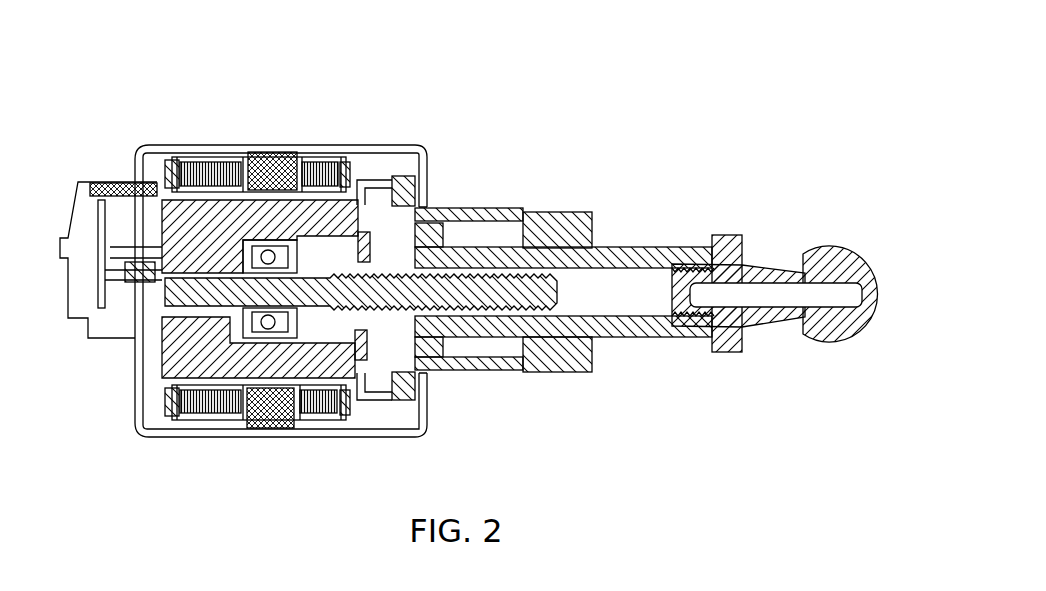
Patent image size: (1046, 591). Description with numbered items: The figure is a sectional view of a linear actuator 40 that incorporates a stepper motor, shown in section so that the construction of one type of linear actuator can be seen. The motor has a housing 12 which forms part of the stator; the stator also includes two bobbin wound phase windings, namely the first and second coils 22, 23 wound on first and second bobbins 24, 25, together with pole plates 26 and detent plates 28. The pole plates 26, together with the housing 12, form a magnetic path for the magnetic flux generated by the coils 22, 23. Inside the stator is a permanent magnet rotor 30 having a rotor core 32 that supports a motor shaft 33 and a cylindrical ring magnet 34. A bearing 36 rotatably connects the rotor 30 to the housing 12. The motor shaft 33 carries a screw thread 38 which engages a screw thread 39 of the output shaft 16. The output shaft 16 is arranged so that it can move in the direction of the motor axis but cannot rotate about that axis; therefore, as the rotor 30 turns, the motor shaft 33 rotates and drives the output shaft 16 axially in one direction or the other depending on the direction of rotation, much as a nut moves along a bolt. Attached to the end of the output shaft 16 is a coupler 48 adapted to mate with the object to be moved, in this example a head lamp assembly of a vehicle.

The housing 12 is at (265, 145).
The output shaft 16 is at (655, 247).
The first coil 22 is at (307, 417).
The second coil 23 is at (230, 407).
The first bobbin 24 is at (343, 433).
The second bobbin 25 is at (183, 417).
The pole plates 26 is at (157, 390).
The detent plates 28 is at (281, 425).
The rotor 30 is at (178, 143).
The rotor core 32 is at (137, 352).
The motor shaft 33 is at (361, 187).
The cylindrical ring magnet 34 is at (203, 145).
The bearing 36 is at (297, 209).
The screw thread 38 is at (465, 273).
The screw thread 39 is at (510, 270).
The actuator 40 is at (461, 256).
The coupler 48 is at (832, 257).